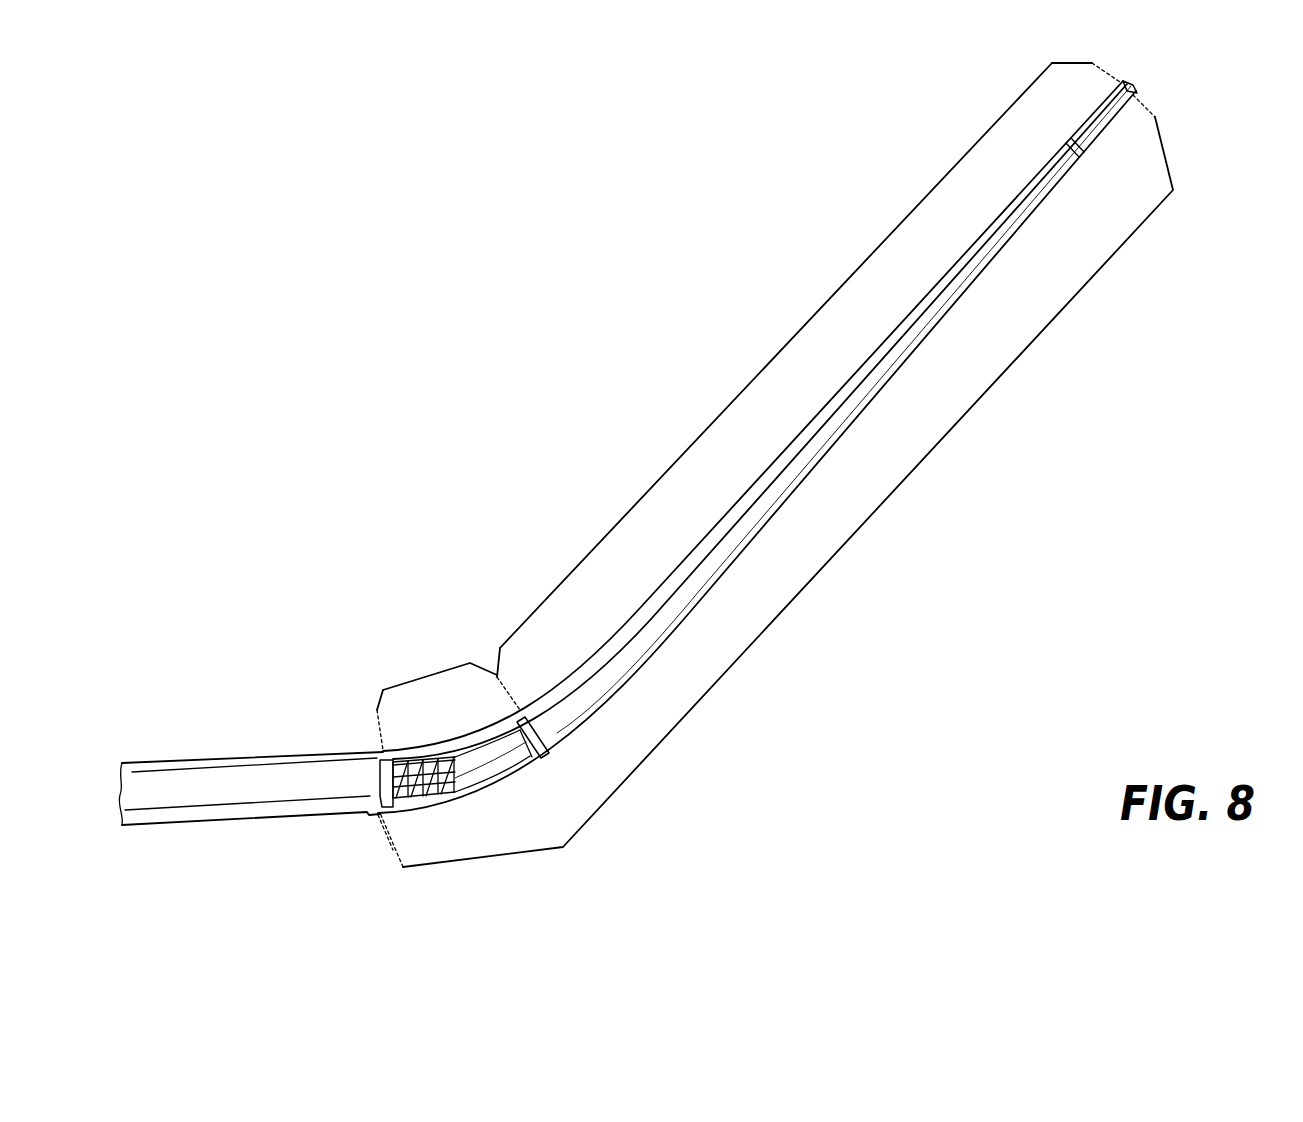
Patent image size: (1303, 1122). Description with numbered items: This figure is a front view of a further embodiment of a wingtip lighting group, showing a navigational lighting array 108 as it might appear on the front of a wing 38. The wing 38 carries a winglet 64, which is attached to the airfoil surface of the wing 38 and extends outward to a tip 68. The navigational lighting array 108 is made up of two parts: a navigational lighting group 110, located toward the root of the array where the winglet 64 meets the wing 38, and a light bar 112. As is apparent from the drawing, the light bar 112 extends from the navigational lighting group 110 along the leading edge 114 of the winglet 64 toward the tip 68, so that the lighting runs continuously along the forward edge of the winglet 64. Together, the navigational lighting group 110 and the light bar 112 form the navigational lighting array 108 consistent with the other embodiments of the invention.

The wing 38 is at (273, 753).
The winglet 64 is at (735, 518).
The tip 68 is at (1138, 82).
The navigational lighting array 108 is at (852, 533).
The navigational lighting group 110 is at (438, 673).
The light bar 112 is at (686, 451).
The leading edge 114 is at (866, 392).